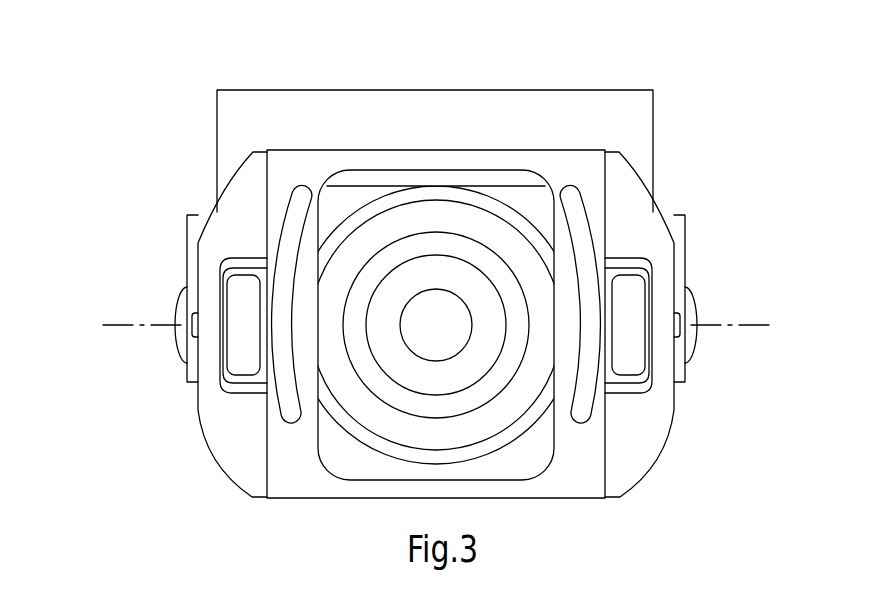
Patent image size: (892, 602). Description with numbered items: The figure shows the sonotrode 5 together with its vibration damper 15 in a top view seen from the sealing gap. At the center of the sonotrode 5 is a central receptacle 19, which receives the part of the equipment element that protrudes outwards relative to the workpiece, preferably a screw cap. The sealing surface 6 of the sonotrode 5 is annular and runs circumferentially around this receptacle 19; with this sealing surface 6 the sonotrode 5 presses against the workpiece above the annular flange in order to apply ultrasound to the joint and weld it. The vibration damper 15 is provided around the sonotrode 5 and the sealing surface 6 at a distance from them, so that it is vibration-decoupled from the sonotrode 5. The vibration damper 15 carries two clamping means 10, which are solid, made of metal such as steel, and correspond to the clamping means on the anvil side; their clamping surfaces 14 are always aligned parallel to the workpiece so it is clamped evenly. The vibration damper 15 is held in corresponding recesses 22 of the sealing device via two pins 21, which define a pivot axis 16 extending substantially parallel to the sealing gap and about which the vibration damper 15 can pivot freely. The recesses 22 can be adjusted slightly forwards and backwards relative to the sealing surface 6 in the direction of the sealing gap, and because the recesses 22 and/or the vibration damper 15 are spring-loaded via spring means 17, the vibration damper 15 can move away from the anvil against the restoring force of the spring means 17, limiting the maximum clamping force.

The sonotrode 5 is at (398, 248).
The sealing surface 6 is at (407, 217).
The clamping means 10 is at (290, 202).
The clamping surface 14 is at (288, 232).
The vibration damper 15 is at (577, 477).
The pivot axis 16 is at (117, 325).
The spring means 17 is at (165, 283).
The central receptacle 19 is at (440, 305).
The pin 21 is at (190, 325).
The recess 22 is at (228, 336).